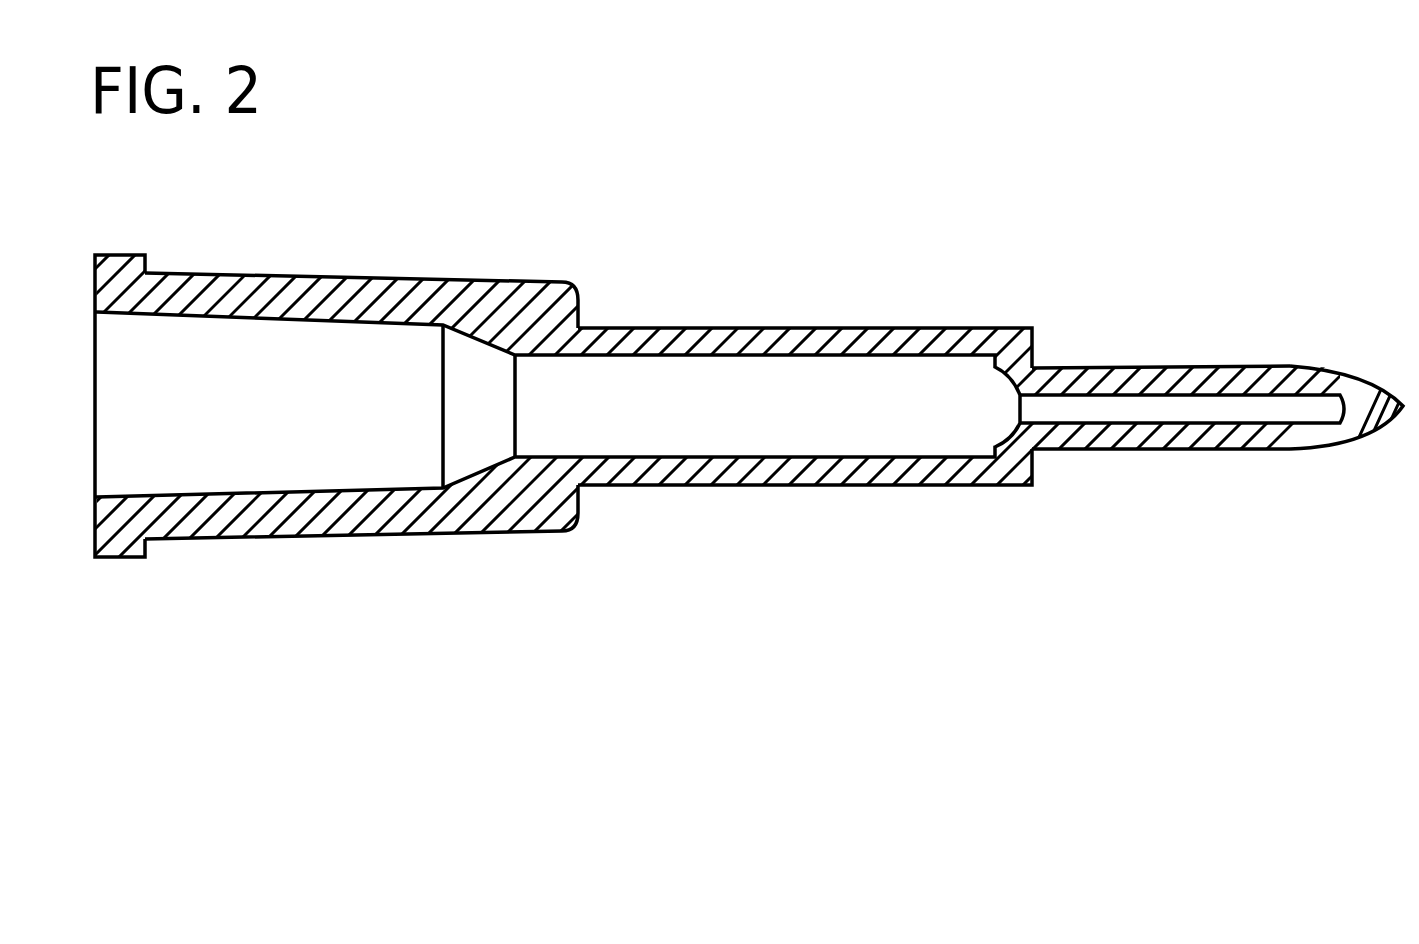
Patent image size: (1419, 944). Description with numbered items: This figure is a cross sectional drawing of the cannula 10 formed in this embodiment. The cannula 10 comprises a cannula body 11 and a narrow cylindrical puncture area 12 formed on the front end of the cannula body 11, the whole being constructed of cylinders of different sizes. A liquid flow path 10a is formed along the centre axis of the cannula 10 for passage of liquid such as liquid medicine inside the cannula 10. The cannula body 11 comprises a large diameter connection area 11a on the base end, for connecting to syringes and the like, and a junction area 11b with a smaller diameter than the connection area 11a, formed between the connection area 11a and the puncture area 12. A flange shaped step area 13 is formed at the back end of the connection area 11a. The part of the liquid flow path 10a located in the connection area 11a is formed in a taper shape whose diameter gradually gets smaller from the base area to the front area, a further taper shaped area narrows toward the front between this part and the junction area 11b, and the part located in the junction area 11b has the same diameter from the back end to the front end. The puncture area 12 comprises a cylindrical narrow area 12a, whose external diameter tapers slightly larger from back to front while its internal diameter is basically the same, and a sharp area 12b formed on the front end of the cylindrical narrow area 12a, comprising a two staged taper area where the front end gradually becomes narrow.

The cannula 10 is at (1027, 192).
The liquid flow path 10a is at (767, 421).
The cannula body 11 is at (663, 195).
The connection area 11a is at (443, 277).
The junction area 11b is at (633, 333).
The puncture area 12 is at (1407, 293).
The cylindrical narrow area 12a is at (1250, 378).
The sharp area 12b is at (1357, 387).
The flange shaped step area 13 is at (127, 253).